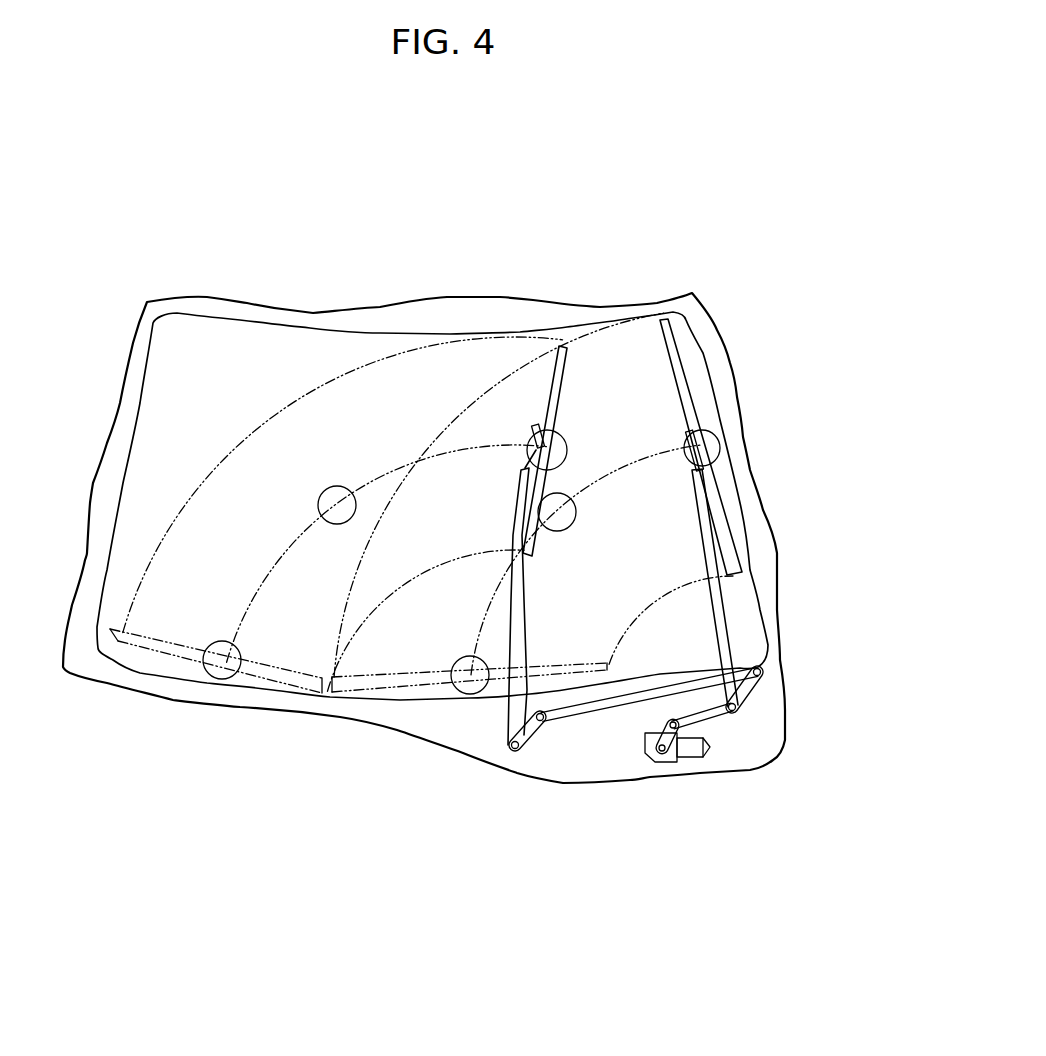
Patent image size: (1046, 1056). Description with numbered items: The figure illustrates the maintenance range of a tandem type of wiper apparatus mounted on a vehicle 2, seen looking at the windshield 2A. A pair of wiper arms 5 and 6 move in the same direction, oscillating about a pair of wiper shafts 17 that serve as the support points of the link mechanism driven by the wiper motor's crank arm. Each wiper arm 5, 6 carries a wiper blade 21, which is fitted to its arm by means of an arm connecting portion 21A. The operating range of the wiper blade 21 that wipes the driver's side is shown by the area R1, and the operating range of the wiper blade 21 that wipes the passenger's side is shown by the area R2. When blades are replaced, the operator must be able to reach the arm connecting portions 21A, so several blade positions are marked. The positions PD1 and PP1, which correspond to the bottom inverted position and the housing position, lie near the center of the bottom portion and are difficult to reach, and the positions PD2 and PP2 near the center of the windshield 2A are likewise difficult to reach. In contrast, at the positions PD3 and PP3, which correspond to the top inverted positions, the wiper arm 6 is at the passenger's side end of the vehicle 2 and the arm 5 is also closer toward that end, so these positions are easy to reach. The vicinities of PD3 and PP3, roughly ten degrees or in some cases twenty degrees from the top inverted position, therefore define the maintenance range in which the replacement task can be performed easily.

The vehicle 2 is at (709, 349).
The windshield 2A is at (215, 345).
The wiper arm 5 is at (520, 660).
The wiper arm 6 is at (733, 613).
The wiper shafts 17 is at (515, 752).
The wiper blade 21 is at (551, 397).
The arm connecting portion 21A is at (531, 445).
The area R1 is at (212, 463).
The area R2 is at (597, 347).
The position PD1 is at (204, 679).
The position PD2 is at (343, 486).
The position PD3 is at (562, 431).
The position PP1 is at (458, 688).
The position PP2 is at (562, 530).
The position PP3 is at (705, 432).